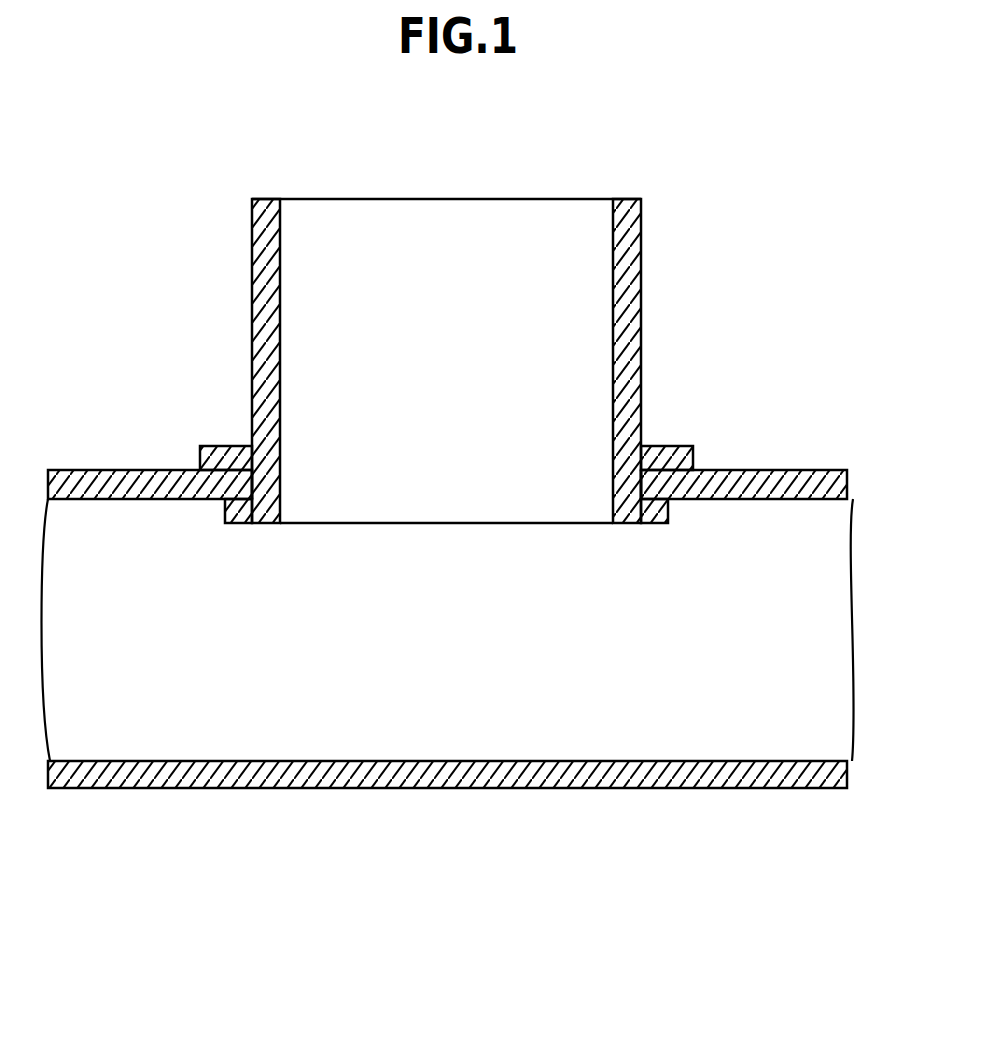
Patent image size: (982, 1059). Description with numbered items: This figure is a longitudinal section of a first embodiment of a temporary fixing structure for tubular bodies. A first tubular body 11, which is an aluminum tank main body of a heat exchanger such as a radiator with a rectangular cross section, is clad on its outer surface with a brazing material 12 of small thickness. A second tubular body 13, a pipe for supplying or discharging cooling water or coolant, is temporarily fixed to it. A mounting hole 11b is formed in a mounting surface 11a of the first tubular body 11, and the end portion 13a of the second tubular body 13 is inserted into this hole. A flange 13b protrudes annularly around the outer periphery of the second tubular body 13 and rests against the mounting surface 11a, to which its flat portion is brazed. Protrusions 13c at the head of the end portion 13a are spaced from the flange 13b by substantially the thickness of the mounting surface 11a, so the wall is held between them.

The first tubular body 11 is at (448, 630).
The mounting surface 11a is at (103, 470).
The mounting hole 11b is at (650, 485).
The brazing material 12 is at (790, 470).
The second tubular body 13 is at (498, 513).
The end portion 13a is at (615, 500).
The flange 13b is at (693, 448).
The protrusion 13c is at (267, 517).